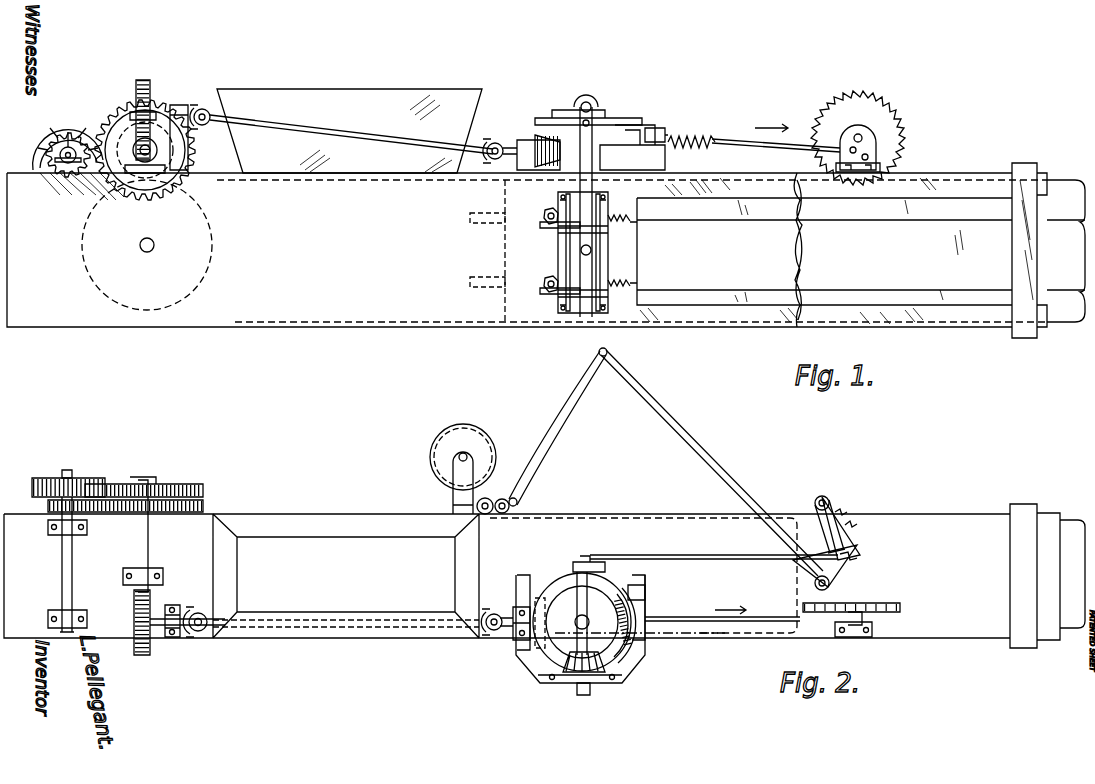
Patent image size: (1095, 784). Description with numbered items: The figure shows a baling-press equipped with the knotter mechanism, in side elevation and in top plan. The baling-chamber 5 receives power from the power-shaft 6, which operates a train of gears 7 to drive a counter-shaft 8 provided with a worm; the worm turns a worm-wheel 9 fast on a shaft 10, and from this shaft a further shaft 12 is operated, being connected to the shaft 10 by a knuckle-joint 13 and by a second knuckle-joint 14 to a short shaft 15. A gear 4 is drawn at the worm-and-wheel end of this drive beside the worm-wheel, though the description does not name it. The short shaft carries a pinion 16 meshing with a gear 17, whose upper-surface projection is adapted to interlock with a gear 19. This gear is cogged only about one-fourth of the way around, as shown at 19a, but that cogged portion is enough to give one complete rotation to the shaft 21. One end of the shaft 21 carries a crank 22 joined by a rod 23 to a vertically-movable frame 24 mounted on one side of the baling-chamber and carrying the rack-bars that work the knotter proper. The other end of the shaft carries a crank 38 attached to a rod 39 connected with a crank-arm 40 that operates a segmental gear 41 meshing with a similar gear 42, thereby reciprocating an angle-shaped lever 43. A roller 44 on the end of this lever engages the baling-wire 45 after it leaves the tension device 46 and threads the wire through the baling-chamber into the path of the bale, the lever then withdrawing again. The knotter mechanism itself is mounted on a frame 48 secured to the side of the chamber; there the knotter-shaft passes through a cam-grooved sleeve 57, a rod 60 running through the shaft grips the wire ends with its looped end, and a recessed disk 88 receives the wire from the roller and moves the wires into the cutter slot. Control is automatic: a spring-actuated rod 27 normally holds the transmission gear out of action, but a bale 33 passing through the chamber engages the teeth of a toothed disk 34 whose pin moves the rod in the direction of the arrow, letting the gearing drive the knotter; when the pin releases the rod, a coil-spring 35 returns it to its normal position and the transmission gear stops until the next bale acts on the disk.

In FIG. 1, the gear wheel 4 is at (82, 133).
In FIG. 2, the gear wheel 4 is at (85, 480).
In FIG. 1, the baling-chamber 5 is at (546, 256).
In FIG. 2, the baling-chamber 5 is at (544, 576).
In FIG. 1, the power-shaft 6 is at (68, 143).
In FIG. 2, the power-shaft 6 is at (68, 478).
In FIG. 1, the train of gears 7 is at (156, 125).
In FIG. 2, the train of gears 7 is at (165, 466).
In FIG. 1, the counter-shaft 8 is at (143, 173).
In FIG. 2, the counter-shaft 8 is at (149, 547).
In FIG. 1, the worm-wheel 9 is at (150, 84).
In FIG. 2, the worm-wheel 9 is at (148, 643).
In FIG. 1, the shaft 10 is at (198, 110).
In FIG. 2, the shaft 10 is at (187, 632).
In FIG. 1, the shaft 12 is at (269, 125).
In FIG. 2, the shaft 12 is at (207, 617).
In FIG. 2, the knuckle-joint 13 is at (185, 634).
In FIG. 2, the knuckle-joint 14 is at (493, 638).
In FIG. 1, the short shaft 15 is at (502, 141).
In FIG. 2, the short shaft 15 is at (506, 613).
In FIG. 1, the pinion 16 is at (528, 132).
In FIG. 2, the pinion 16 is at (534, 658).
In FIG. 1, the gear 17 is at (632, 147).
In FIG. 2, the gear 19 is at (581, 622).
In FIG. 2, the cogged portion 19a is at (628, 644).
In FIG. 2, the shaft 21 is at (580, 600).
In FIG. 1, the crank 22 is at (600, 103).
In FIG. 2, the crank 22 is at (590, 690).
In FIG. 1, the rod 23 is at (580, 168).
In FIG. 1, the vertically-movable frame 24 is at (570, 314).
In FIG. 1, the spring-actuated rod 27 is at (777, 136).
In FIG. 2, the spring-actuated rod 27 is at (760, 616).
In FIG. 1, the bale 33 is at (861, 250).
In FIG. 1, the toothed disk 34 is at (858, 138).
In FIG. 2, the toothed disk 34 is at (886, 603).
In FIG. 1, the coil-spring 35 is at (712, 140).
In FIG. 2, the crank 38 is at (590, 561).
In FIG. 2, the rod 39 is at (698, 556).
In FIG. 2, the crank-arm 40 is at (838, 522).
In FIG. 2, the segmental gear 41 is at (834, 528).
In FIG. 2, the segmental gear 42 is at (848, 566).
In FIG. 2, the angle-shaped lever 43 is at (711, 462).
In FIG. 2, the roller 44 is at (519, 498).
In FIG. 2, the baling-wire 45 is at (500, 475).
In FIG. 2, the tension device 46 is at (493, 516).
In FIG. 1, the frame 48 is at (619, 250).
In FIG. 1, the sleeve 57 is at (562, 258).
In FIG. 1, the rod 60 is at (640, 222).
In FIG. 1, the disk 88 is at (544, 216).